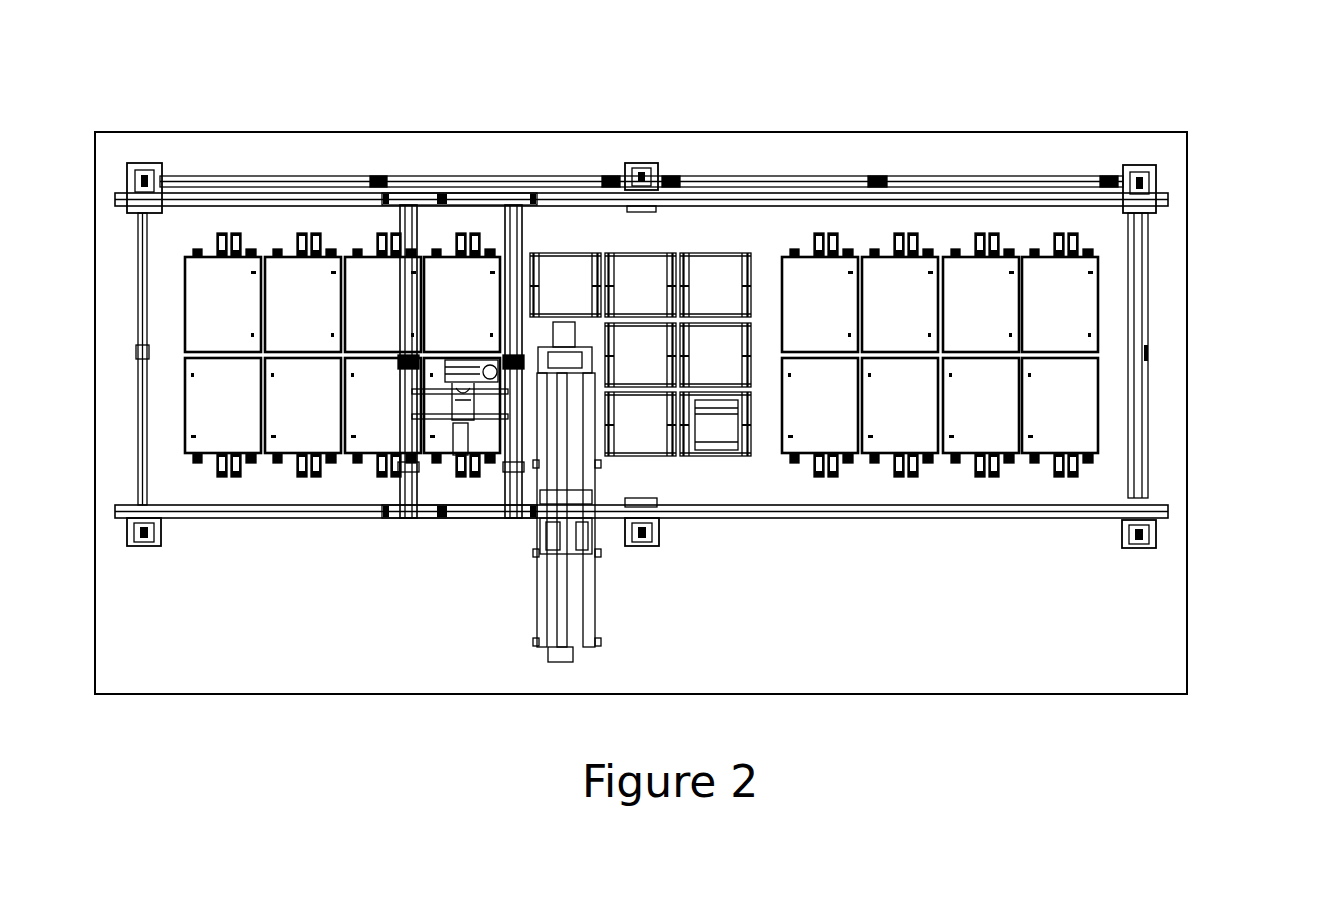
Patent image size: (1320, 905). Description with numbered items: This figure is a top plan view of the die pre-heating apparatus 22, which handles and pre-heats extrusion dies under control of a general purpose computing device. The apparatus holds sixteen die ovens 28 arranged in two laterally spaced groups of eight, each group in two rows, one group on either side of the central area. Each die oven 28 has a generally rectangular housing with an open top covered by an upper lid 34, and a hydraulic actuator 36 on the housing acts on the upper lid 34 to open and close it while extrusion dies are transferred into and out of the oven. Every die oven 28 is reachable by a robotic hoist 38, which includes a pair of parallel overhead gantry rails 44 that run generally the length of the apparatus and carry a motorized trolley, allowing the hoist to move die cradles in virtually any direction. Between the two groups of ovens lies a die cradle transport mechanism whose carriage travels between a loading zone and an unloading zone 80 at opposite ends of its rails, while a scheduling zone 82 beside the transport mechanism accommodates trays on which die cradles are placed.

The die pre-heating apparatus 22 is at (1250, 149).
The die oven 28 is at (907, 426).
The upper lid 34 is at (1067, 317).
The hydraulic actuator 36 is at (302, 228).
The robotic hoist 38 is at (453, 489).
The gantry rails 44 is at (1018, 195).
The unloading zone 80 is at (608, 606).
The scheduling zone 82 is at (648, 300).